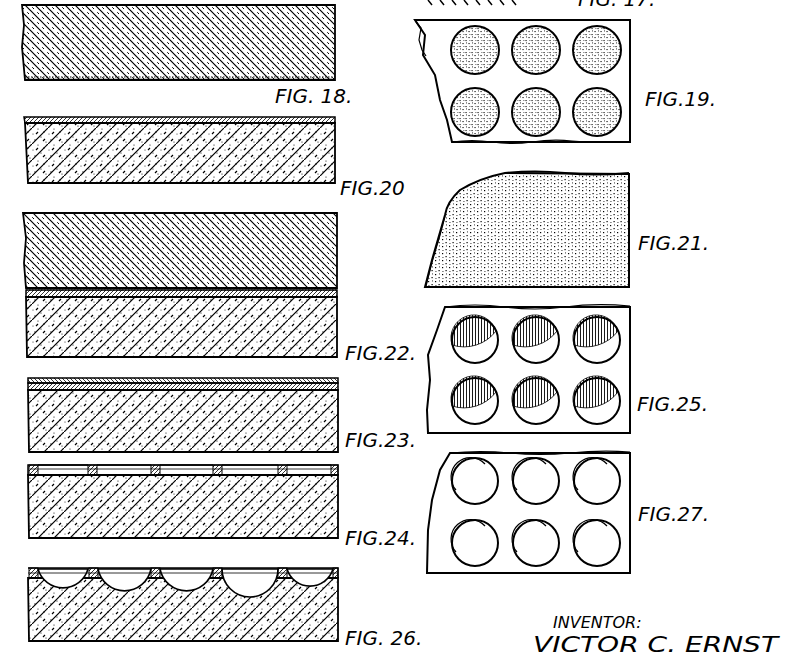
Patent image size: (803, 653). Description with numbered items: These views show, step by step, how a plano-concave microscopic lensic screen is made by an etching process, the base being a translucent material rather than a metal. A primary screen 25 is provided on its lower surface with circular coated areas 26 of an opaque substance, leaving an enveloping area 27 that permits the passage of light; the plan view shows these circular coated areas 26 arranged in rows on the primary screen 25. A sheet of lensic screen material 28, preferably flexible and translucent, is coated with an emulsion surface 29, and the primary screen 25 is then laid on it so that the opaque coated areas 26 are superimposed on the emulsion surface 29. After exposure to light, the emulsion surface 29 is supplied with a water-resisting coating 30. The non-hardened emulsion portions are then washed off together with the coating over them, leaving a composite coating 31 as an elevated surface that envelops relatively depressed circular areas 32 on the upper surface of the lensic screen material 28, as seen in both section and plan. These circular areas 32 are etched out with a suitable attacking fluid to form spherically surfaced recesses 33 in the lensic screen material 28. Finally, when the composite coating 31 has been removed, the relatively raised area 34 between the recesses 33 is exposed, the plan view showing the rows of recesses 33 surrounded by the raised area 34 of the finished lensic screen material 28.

In FIG. 18, the primary screen 25 is at (317, 42).
In FIG. 19, the primary screen 25 is at (447, 88).
In FIG. 22, the primary screen 25 is at (327, 242).
In FIG. 18, the circular coated areas 26 is at (125, 83).
In FIG. 19, the circular coated areas 26 is at (458, 65).
In FIG. 22, the circular coated areas 26 is at (247, 288).
In FIG. 18, the enveloping area 27 is at (87, 83).
In FIG. 19, the enveloping area 27 is at (505, 123).
In FIG. 22, the enveloping area 27 is at (157, 288).
In FIG. 20, the lensic screen material 28 is at (337, 165).
In FIG. 22, the lensic screen material 28 is at (325, 328).
In FIG. 23, the lensic screen material 28 is at (328, 413).
In FIG. 21, the lensic screen material 28 is at (445, 245).
In FIG. 24, the lensic screen material 28 is at (333, 512).
In FIG. 26, the lensic screen material 28 is at (325, 613).
In FIG. 25, the lensic screen material 28 is at (458, 435).
In FIG. 27, the lensic screen material 28 is at (497, 573).
In FIG. 20, the emulsion surface 29 is at (337, 119).
In FIG. 22, the emulsion surface 29 is at (337, 291).
In FIG. 23, the emulsion surface 29 is at (338, 387).
In FIG. 21, the emulsion surface 29 is at (472, 202).
In FIG. 23, the water-resisting coating 30 is at (338, 376).
In FIG. 24, the composite coating 31 is at (158, 470).
In FIG. 26, the composite coating 31 is at (153, 570).
In FIG. 25, the composite coating 31 is at (615, 370).
In FIG. 24, the depressed circular areas 32 is at (288, 468).
In FIG. 25, the depressed circular areas 32 is at (460, 322).
In FIG. 26, the spherically surfaced recesses 33 is at (302, 587).
In FIG. 27, the spherically surfaced recesses 33 is at (463, 487).
In FIG. 27, the relatively raised area 34 is at (565, 560).